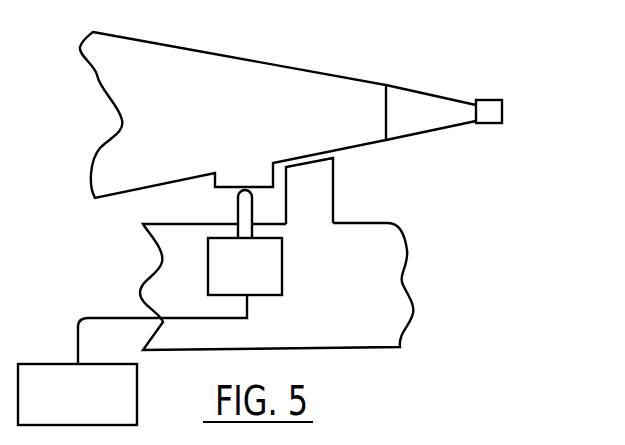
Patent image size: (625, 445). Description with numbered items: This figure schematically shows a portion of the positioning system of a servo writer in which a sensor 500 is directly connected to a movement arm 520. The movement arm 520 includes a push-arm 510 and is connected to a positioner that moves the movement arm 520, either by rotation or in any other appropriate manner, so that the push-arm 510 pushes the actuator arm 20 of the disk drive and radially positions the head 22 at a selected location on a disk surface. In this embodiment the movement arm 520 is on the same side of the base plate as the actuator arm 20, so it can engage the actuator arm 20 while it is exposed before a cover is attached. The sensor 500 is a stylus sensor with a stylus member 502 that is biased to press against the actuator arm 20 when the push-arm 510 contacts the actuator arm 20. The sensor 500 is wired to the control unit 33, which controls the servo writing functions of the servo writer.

The actuator arm 20 is at (250, 60).
The head 22 is at (488, 100).
The push-arm 510 is at (334, 189).
The movement arm 520 is at (352, 349).
The stylus member 502 is at (237, 194).
The sensor 500 is at (282, 260).
The control unit 33 is at (53, 364).